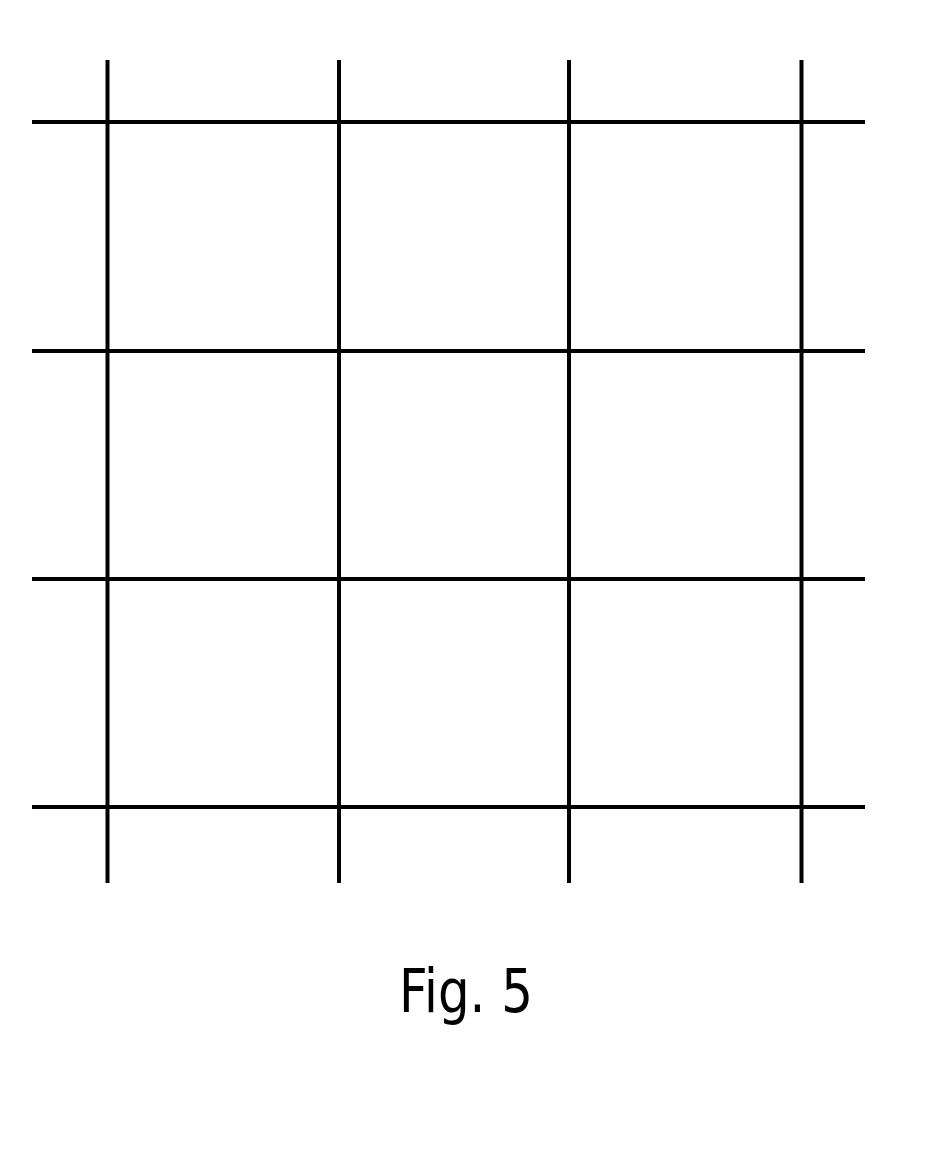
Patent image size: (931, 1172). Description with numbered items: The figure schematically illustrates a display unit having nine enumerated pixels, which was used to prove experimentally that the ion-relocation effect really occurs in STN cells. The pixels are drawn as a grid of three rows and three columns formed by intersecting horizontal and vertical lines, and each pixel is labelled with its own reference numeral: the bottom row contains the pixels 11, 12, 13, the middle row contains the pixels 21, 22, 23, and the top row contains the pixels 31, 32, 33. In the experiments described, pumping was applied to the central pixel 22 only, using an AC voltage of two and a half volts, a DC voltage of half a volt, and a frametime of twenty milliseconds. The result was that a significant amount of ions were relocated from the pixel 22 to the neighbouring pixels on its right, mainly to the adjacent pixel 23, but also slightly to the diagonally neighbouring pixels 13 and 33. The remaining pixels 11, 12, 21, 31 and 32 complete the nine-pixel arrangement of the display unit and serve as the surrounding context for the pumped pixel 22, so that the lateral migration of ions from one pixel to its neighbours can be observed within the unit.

The pixel 11 is at (224, 693).
The pixel 12 is at (454, 693).
The pixel 13 is at (685, 693).
The pixel 21 is at (224, 465).
The pixel 22 is at (454, 465).
The pixel 23 is at (685, 465).
The pixel 31 is at (224, 236).
The pixel 32 is at (454, 236).
The pixel 33 is at (685, 236).